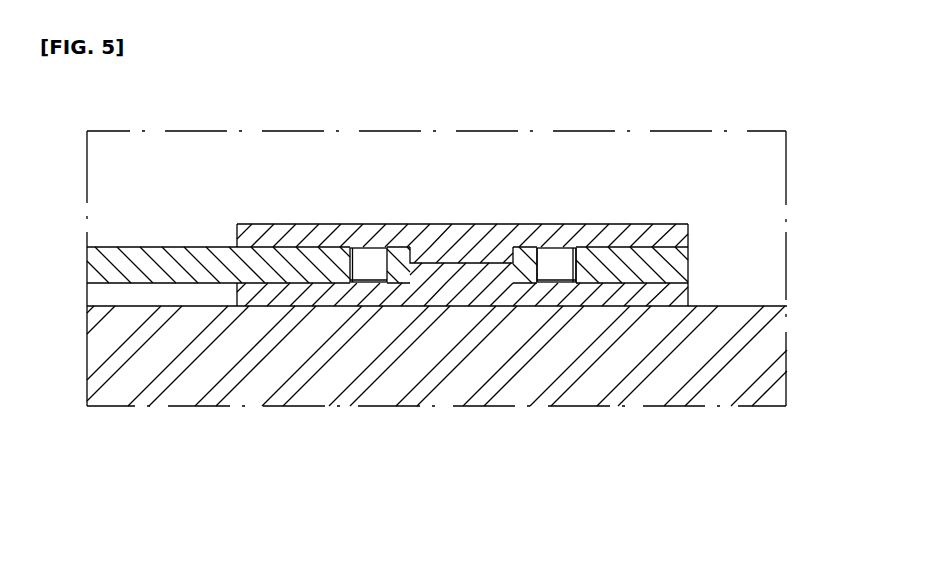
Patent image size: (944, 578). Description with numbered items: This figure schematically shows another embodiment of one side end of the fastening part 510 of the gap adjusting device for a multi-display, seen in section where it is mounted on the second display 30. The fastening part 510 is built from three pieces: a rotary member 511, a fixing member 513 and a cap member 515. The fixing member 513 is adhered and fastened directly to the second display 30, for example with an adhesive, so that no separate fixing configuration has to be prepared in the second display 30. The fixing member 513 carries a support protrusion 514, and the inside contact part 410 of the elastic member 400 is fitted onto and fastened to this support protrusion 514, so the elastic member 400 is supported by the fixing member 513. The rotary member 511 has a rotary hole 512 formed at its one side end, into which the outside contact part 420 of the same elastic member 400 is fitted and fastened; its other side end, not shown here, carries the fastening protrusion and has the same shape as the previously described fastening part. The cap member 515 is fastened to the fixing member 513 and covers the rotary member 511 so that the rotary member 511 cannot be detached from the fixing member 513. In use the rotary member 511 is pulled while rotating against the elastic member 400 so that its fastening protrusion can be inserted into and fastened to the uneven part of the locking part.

The second display 30 is at (737, 350).
The elastic member 400 is at (552, 270).
The inside contact part 410 is at (537, 267).
The outside contact part 420 is at (577, 266).
The fastening part 510 is at (173, 225).
The rotary member 511 is at (128, 267).
The rotary hole 512 is at (362, 270).
The fixing member 513 is at (290, 292).
The support protrusion 514 is at (407, 243).
The cap member 515 is at (568, 237).